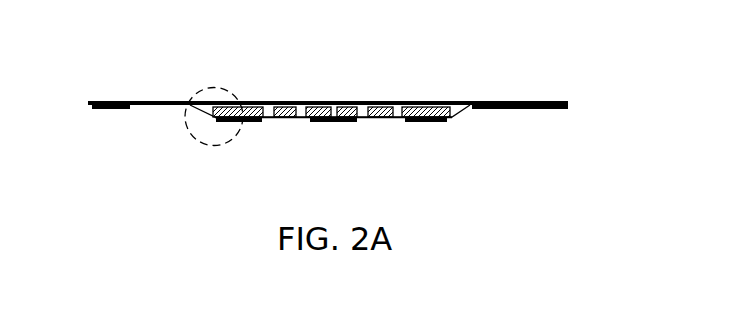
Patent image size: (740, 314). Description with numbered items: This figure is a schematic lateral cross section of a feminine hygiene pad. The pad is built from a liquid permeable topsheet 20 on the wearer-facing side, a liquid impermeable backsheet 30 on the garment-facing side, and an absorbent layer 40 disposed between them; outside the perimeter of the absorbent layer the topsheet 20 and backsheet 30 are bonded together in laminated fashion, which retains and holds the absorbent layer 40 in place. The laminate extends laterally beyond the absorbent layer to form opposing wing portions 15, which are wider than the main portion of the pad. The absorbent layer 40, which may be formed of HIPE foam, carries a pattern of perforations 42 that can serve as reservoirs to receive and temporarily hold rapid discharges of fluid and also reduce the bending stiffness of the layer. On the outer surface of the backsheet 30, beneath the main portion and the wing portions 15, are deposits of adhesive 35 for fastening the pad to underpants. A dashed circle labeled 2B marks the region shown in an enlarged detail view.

The wing portions 15 is at (120, 87).
The liquid permeable topsheet 20 is at (395, 101).
The liquid impermeable backsheet 30 is at (378, 118).
The adhesive deposits 35 is at (330, 118).
The absorbent layer 40 is at (305, 118).
The perforations 42 is at (332, 101).
The detail view circle 2B is at (187, 128).